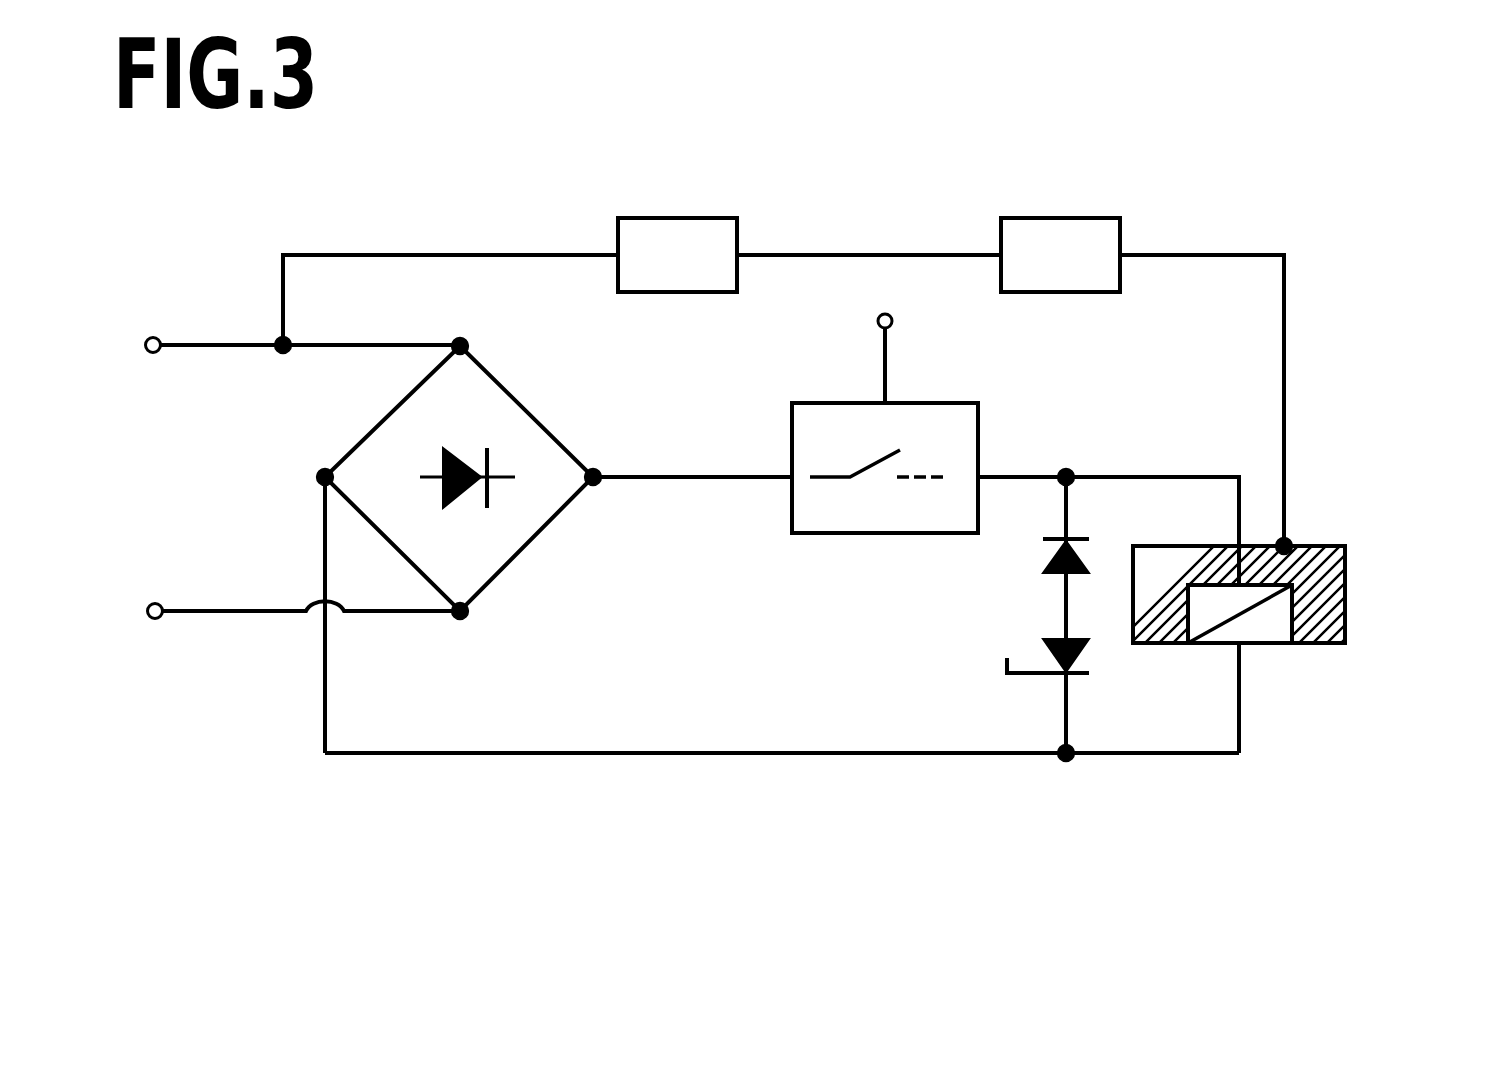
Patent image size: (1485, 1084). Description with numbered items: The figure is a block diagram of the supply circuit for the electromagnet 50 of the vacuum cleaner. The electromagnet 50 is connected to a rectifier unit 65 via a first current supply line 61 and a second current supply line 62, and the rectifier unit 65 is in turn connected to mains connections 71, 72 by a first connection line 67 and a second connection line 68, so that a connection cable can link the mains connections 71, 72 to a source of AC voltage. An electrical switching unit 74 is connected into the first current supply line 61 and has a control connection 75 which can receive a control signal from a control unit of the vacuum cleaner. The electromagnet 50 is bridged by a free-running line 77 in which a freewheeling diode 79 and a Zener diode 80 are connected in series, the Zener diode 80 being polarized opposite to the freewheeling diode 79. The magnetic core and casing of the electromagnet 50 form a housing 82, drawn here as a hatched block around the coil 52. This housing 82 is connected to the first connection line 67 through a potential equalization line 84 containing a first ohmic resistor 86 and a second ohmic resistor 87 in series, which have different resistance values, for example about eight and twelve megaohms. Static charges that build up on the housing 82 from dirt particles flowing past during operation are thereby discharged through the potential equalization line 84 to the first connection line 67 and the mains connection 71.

The electromagnet 50 is at (1280, 628).
The relay coil 52 is at (1258, 628).
The first current supply line 61 is at (706, 477).
The second current supply line 62 is at (710, 756).
The rectifier unit 65 is at (528, 580).
The first connection line 67 is at (236, 345).
The second connection line 68 is at (263, 614).
The mains connection 71 is at (153, 338).
The mains connection 72 is at (148, 618).
The electrical switching unit 74 is at (825, 555).
The control connection 75 is at (893, 323).
The free-running line 77 is at (1068, 705).
The freewheeling diode 79 is at (1010, 575).
The Zener diode 80 is at (985, 680).
The housing 82 is at (1347, 562).
The potential equalization line 84 is at (1288, 380).
The first ohmic resistor 86 is at (663, 228).
The second ohmic resistor 87 is at (1063, 233).